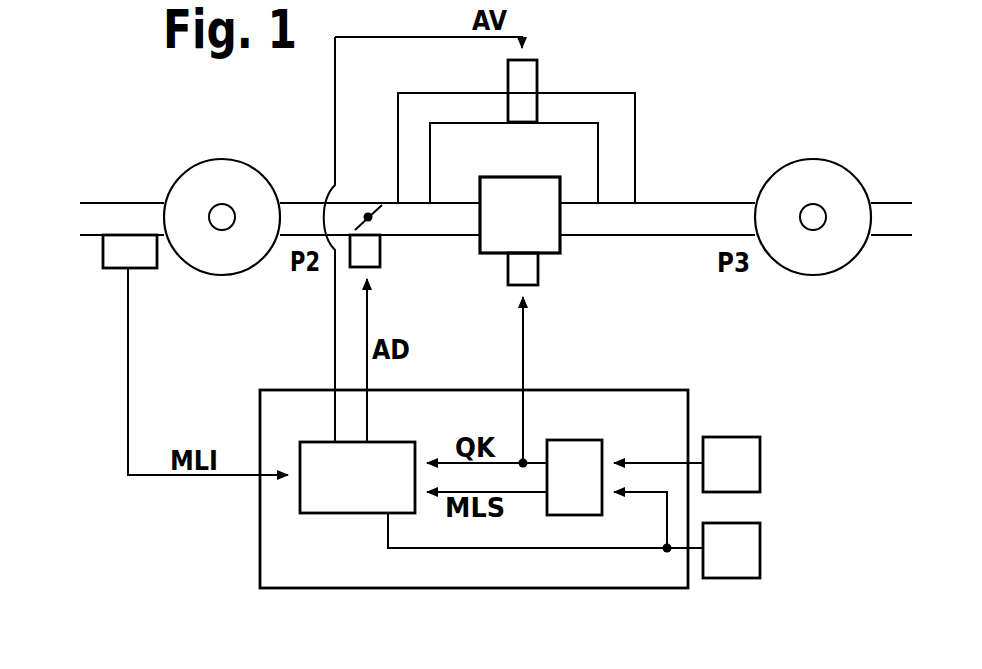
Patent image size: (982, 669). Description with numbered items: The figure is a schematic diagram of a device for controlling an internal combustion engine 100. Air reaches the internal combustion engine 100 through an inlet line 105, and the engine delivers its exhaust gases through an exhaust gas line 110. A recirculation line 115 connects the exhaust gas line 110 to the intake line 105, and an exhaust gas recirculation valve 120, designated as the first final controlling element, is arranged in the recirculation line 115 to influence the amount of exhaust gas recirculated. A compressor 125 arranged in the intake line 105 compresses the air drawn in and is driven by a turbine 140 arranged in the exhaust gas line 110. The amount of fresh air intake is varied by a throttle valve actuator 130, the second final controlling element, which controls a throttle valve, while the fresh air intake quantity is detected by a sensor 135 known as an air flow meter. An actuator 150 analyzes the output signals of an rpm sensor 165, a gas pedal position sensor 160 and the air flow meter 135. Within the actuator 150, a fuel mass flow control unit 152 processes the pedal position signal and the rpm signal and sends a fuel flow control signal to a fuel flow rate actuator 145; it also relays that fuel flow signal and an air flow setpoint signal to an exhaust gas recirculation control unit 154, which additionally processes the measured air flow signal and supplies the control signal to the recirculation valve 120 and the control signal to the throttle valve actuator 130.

The internal combustion engine 100 is at (513, 185).
The inlet line 105 is at (430, 222).
The exhaust gas line 110 is at (600, 218).
The recirculation line 115 is at (608, 107).
The exhaust gas recirculation valve 120 is at (527, 82).
The compressor 125 is at (188, 180).
The throttle valve actuator 130 is at (373, 260).
The sensor 135 is at (118, 262).
The turbine 140 is at (840, 175).
The fuel flow rate actuator 145 is at (538, 270).
The actuator 150 is at (545, 587).
The fuel mass flow control unit 152 is at (575, 457).
The exhaust gas recirculation control unit 154 is at (345, 505).
The gas pedal position sensor 160 is at (748, 463).
The rpm sensor 165 is at (748, 555).